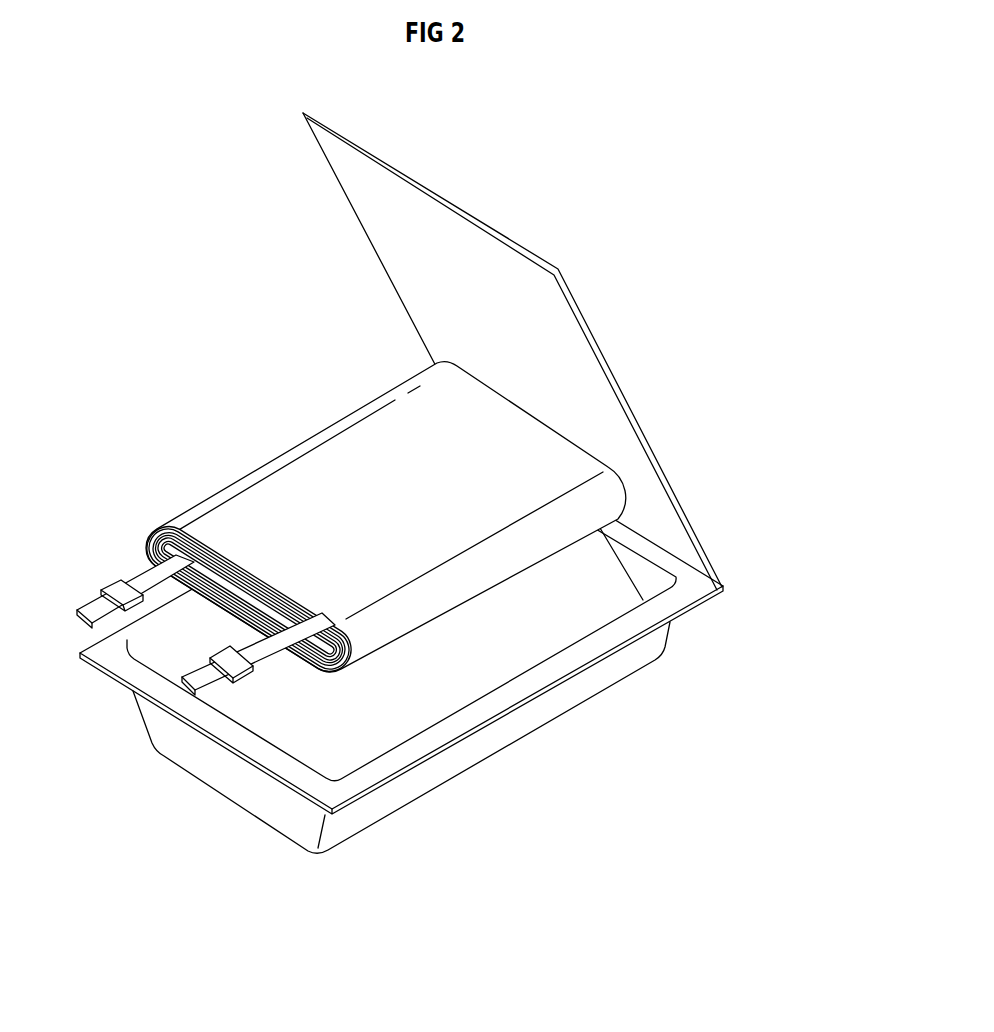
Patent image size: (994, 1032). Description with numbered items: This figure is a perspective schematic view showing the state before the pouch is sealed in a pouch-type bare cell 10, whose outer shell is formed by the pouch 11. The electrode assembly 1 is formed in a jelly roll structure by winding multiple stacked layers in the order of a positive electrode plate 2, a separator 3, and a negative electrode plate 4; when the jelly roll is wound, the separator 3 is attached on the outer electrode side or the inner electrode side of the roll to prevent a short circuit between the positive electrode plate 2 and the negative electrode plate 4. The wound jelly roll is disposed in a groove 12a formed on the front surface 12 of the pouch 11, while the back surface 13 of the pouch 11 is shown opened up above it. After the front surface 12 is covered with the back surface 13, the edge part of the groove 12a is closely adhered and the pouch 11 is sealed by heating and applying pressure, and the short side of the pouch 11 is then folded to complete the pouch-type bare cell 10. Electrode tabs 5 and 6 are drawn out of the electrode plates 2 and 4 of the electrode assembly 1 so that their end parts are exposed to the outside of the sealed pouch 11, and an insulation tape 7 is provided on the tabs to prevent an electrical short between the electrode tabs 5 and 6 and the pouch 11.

The electrode assembly 1 is at (262, 418).
The positive electrode plate 2 is at (155, 525).
The separator 3 is at (148, 533).
The negative electrode plate 4 is at (148, 551).
The electrode tab 5 is at (262, 645).
The electrode tab 6 is at (172, 567).
The insulation tape 7 is at (122, 581).
The pouch-type bare cell 10 is at (668, 158).
The pouch 11 is at (802, 588).
The front surface 12 is at (682, 593).
The groove 12a is at (468, 687).
The back surface 13 is at (688, 550).